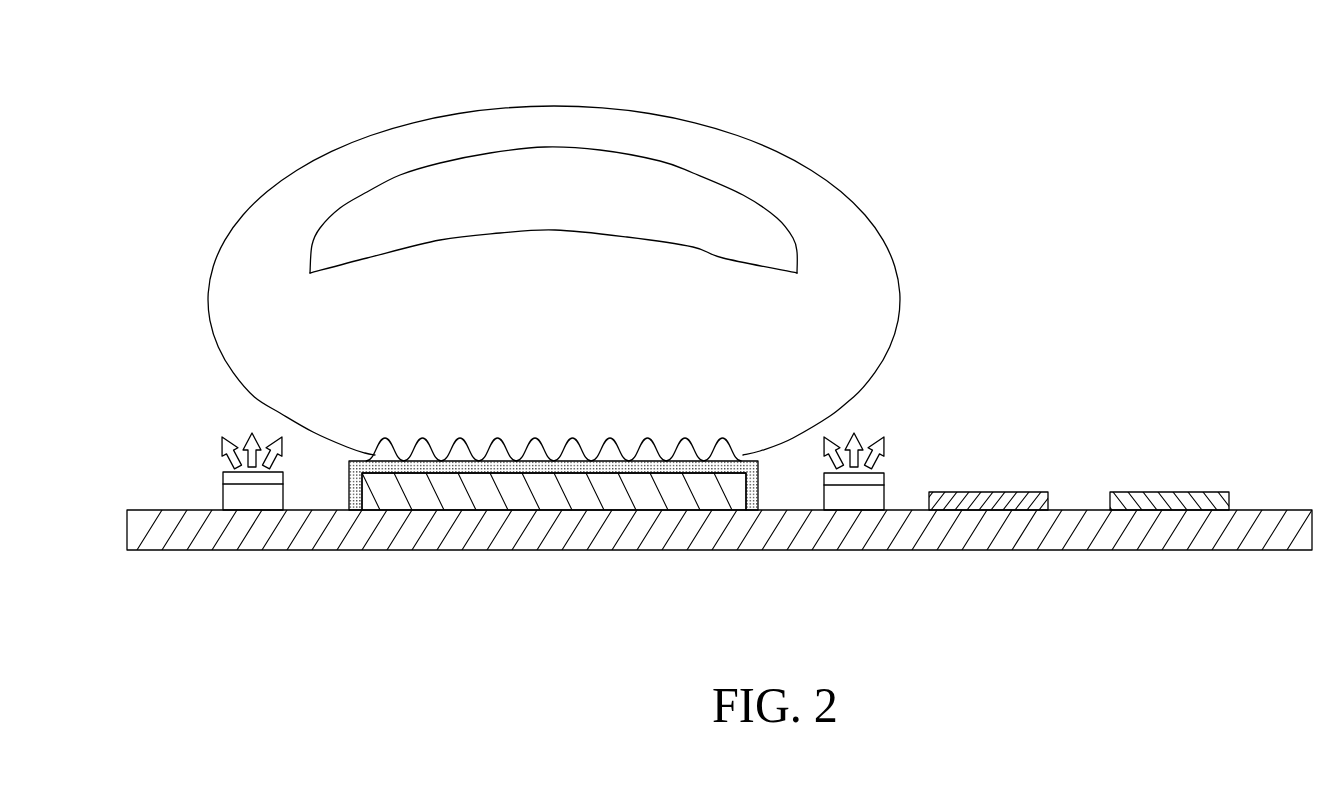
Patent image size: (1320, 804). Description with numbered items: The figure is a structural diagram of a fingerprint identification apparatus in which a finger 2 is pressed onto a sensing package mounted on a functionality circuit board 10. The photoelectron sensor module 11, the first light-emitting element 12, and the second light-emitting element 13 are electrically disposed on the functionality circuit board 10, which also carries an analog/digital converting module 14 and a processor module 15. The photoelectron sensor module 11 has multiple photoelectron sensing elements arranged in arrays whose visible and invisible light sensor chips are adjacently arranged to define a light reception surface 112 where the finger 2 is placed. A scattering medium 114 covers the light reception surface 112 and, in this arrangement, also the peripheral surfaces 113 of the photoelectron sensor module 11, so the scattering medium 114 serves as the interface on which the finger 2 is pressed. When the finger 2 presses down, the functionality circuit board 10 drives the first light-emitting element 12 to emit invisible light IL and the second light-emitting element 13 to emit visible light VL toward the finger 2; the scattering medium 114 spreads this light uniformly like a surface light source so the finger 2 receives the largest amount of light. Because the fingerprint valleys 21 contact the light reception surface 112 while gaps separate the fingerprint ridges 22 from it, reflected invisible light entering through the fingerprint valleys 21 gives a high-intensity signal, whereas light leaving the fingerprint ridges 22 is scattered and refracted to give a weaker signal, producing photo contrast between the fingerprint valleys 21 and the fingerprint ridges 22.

The finger 2 is at (797, 182).
The fingerprint valleys 21 is at (378, 446).
The fingerprint ridges 22 is at (498, 448).
The functionality circuit board 10 is at (443, 537).
The photoelectron sensor module 11 is at (670, 500).
The light reception surface 112 is at (748, 455).
The peripheral surfaces 113 is at (348, 491).
The scattering medium 114 is at (510, 466).
The first light-emitting element 12 is at (237, 502).
The second light-emitting element 13 is at (860, 502).
The analog/digital converting module 14 is at (1028, 501).
The processor module 15 is at (1167, 500).